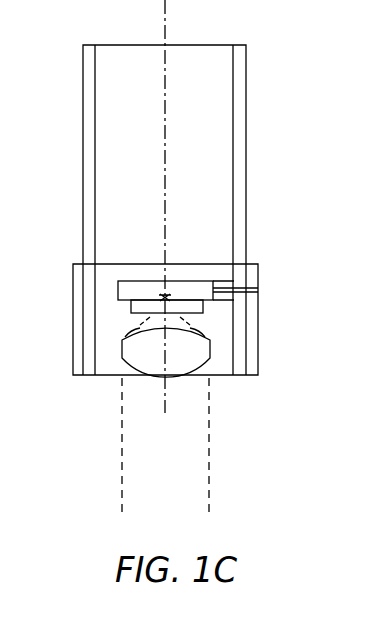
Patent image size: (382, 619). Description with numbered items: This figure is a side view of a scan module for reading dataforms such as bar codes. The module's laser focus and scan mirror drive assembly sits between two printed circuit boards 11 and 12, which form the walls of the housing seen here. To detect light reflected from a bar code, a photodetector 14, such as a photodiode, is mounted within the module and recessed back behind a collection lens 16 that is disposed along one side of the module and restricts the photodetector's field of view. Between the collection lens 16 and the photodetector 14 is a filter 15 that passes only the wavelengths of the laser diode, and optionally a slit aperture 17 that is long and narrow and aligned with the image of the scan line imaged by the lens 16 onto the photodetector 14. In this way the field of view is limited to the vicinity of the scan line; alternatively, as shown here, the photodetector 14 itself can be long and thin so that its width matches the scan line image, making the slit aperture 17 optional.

The printed circuit board 11 is at (86, 196).
The printed circuit board 12 is at (244, 220).
The photodetector 14 is at (233, 281).
The filter 15 is at (198, 313).
The collection lens 16 is at (200, 362).
The slit aperture 17 is at (232, 303).